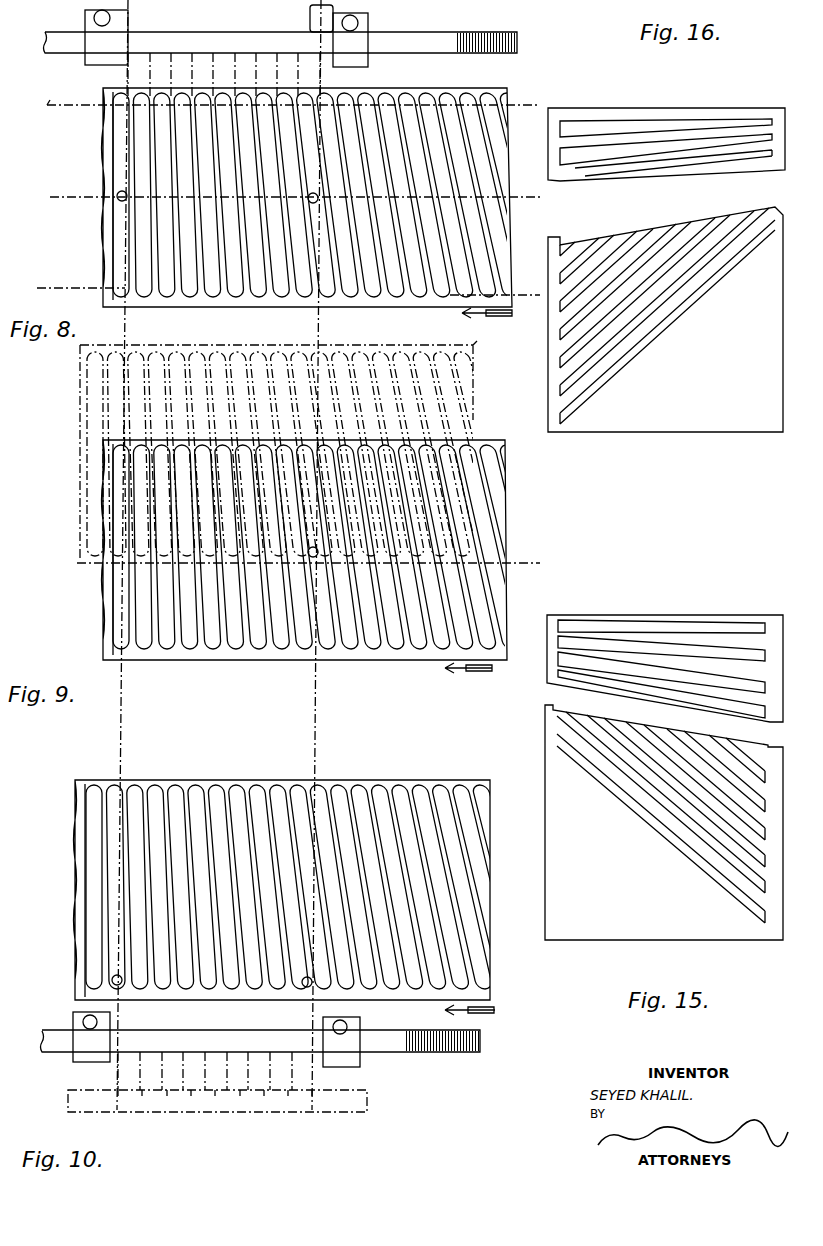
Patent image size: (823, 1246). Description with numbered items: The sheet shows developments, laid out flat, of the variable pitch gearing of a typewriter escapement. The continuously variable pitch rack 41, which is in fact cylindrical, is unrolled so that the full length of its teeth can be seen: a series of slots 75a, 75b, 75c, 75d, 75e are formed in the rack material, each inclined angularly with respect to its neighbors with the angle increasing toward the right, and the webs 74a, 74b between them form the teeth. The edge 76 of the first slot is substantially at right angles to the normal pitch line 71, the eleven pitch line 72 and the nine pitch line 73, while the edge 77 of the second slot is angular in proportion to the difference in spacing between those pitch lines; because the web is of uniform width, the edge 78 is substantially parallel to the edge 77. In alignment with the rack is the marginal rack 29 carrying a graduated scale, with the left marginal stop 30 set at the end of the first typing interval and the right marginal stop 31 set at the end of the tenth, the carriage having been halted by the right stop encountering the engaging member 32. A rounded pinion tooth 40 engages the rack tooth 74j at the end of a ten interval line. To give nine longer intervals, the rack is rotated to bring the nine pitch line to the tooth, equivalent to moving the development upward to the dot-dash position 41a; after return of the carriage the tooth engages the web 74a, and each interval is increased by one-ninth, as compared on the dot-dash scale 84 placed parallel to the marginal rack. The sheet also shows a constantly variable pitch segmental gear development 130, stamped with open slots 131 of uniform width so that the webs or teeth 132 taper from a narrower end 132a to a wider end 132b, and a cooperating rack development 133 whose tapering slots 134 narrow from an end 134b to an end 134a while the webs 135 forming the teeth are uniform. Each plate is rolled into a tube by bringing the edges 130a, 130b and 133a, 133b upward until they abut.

In FIG. 8, the marginal rack 29 is at (145, 32).
In FIG. 10, the marginal rack 29 is at (381, 1038).
In FIG. 8, the left marginal stop 30 is at (85, 12).
In FIG. 10, the left marginal stop 30 is at (77, 1058).
In FIG. 8, the right marginal stop 31 is at (368, 22).
In FIG. 10, the right marginal stop 31 is at (356, 1062).
In FIG. 8, the engaging member 32 is at (310, 16).
In FIG. 8, the pinion tooth 40 is at (318, 203).
In FIG. 9, the pinion tooth 40 is at (313, 558).
In FIG. 10, the pinion tooth 40 is at (112, 990).
In FIG. 9, the variable pitch rack 41 is at (150, 656).
In FIG. 10, the variable pitch rack 41 is at (190, 990).
In FIG. 9, the rack development in shifted position 41a is at (88, 448).
In FIG. 8, the normal pitch line 71 is at (92, 199).
In FIG. 8, the eleven pitch line 72 is at (56, 110).
In FIG. 8, the nine pitch line 73 is at (74, 288).
In FIG. 8, the web 74a is at (130, 162).
In FIG. 10, the web 74a is at (123, 887).
In FIG. 8, the web 74b is at (150, 156).
In FIG. 8, the web 74j is at (342, 285).
In FIG. 10, the web 74j is at (283, 837).
In FIG. 8, the slot 75a is at (122, 289).
In FIG. 8, the slot 75b is at (145, 289).
In FIG. 8, the slot 75c is at (168, 289).
In FIG. 8, the slot 75d is at (192, 270).
In FIG. 8, the slot 75e is at (214, 258).
In FIG. 8, the slot edge 76 is at (116, 140).
In FIG. 8, the slot edge 77 is at (140, 218).
In FIG. 8, the slot edge 78 is at (128, 214).
In FIG. 10, the scale 84 is at (204, 1113).
In FIG. 15, the segmental gear development 130 is at (545, 830).
In FIG. 15, the plate edge 130a is at (628, 940).
In FIG. 15, the plate edge 130b is at (682, 615).
In FIG. 15, the slot 131 is at (562, 655).
In FIG. 15, the tooth 132 is at (640, 676).
In FIG. 15, the tooth end 132a is at (574, 634).
In FIG. 15, the tooth end 132b is at (752, 668).
In FIG. 16, the rack development 133 is at (600, 432).
In FIG. 16, the plate edge 133a is at (548, 322).
In FIG. 16, the plate edge 133b is at (735, 365).
In FIG. 16, the slot 134 is at (620, 132).
In FIG. 16, the slot end 134a is at (760, 120).
In FIG. 16, the slot end 134b is at (570, 115).
In FIG. 16, the web 135 is at (690, 140).